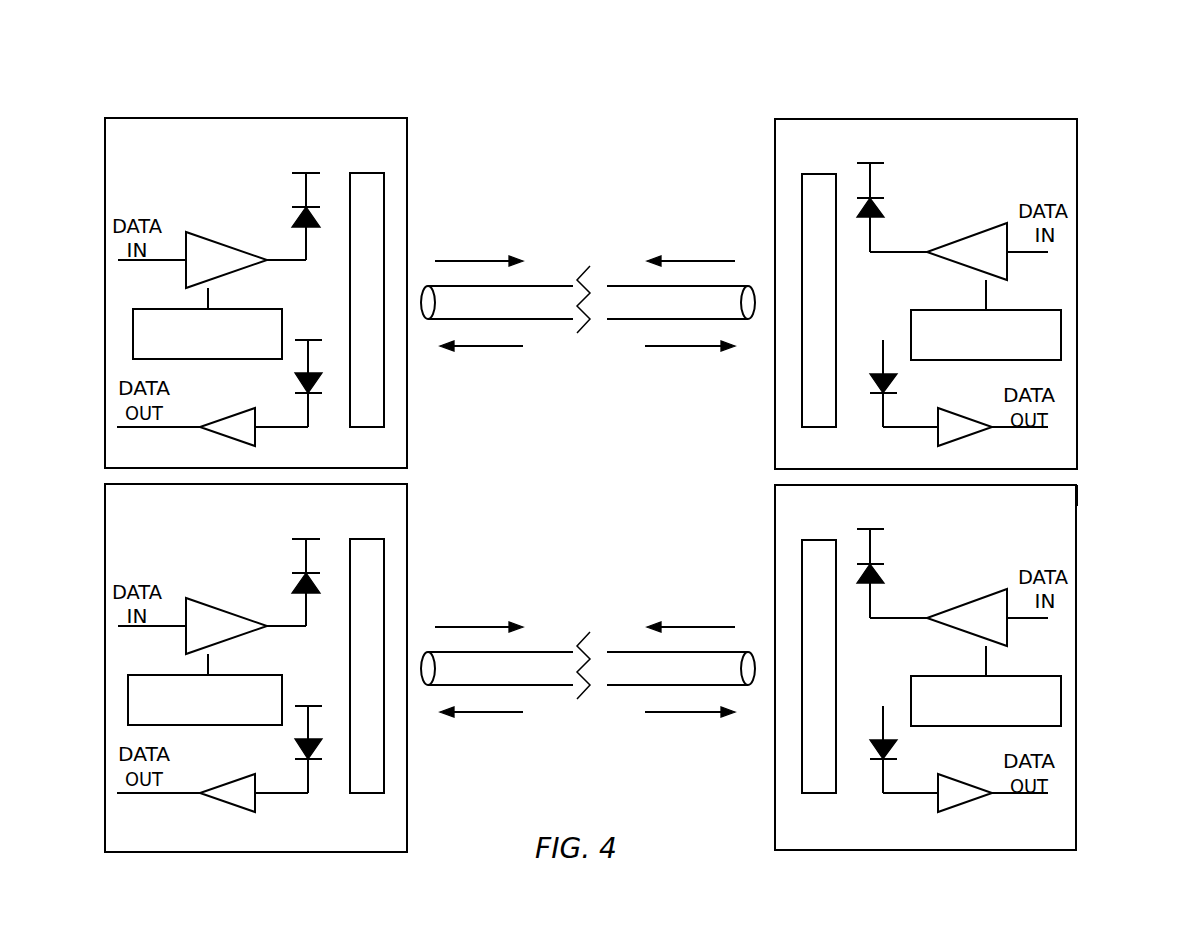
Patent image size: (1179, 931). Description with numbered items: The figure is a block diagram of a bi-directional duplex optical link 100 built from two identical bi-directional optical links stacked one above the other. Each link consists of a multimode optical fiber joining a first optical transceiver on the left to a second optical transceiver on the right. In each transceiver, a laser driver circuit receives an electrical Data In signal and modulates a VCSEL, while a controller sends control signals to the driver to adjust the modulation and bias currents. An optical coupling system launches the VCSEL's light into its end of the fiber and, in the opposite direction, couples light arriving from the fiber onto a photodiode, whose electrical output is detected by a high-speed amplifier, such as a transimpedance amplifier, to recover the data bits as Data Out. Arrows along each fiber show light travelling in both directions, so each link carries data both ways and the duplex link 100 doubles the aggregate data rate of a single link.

The bi-directional duplex optical link 100 is at (160, 71).